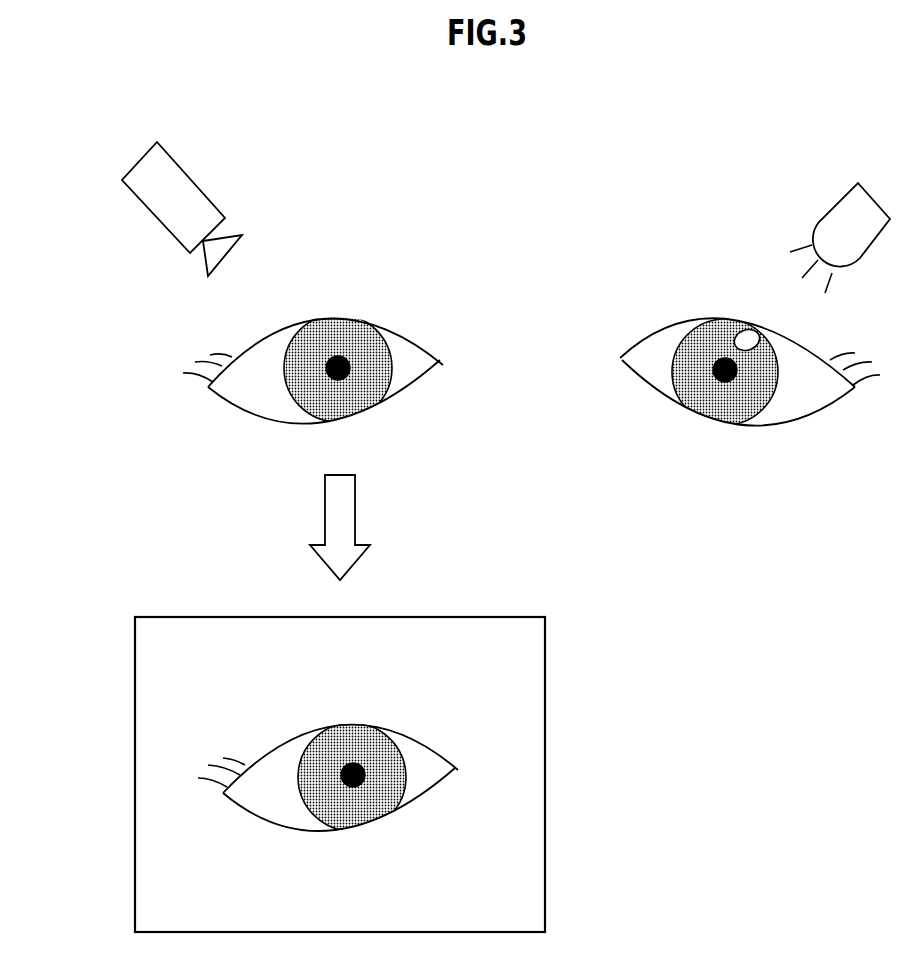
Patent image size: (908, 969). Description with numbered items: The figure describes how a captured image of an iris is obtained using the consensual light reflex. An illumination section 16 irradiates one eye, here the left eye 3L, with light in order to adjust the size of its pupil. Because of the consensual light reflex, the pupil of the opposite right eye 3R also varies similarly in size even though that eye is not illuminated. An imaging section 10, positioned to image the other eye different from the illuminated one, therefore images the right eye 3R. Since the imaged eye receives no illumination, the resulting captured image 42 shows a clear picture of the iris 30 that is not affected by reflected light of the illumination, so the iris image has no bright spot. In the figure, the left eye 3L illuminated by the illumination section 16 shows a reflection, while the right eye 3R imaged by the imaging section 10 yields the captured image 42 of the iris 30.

The imaging section 10 is at (138, 160).
The illumination section 16 is at (877, 195).
The right eye 3R is at (332, 317).
The left eye 3L is at (725, 317).
The captured image 42 is at (340, 745).
The iris 30 is at (383, 792).